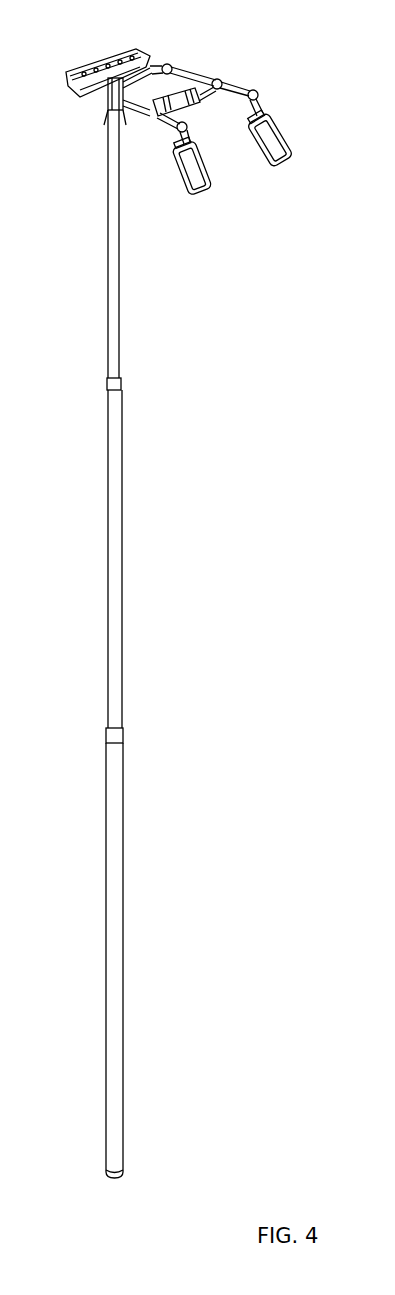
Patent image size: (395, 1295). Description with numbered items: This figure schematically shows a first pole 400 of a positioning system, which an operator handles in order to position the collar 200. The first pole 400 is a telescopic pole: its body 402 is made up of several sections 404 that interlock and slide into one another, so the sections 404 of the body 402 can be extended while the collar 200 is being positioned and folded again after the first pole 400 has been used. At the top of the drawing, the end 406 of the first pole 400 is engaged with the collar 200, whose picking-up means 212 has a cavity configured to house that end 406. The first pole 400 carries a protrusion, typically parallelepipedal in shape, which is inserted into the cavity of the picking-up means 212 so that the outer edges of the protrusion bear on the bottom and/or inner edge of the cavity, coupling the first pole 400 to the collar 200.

The collar 200 is at (194, 103).
The cavity 212 is at (105, 121).
The first pole 400 is at (153, 644).
The body 402 is at (110, 737).
The sections 404 is at (115, 316).
The end 406 is at (113, 120).